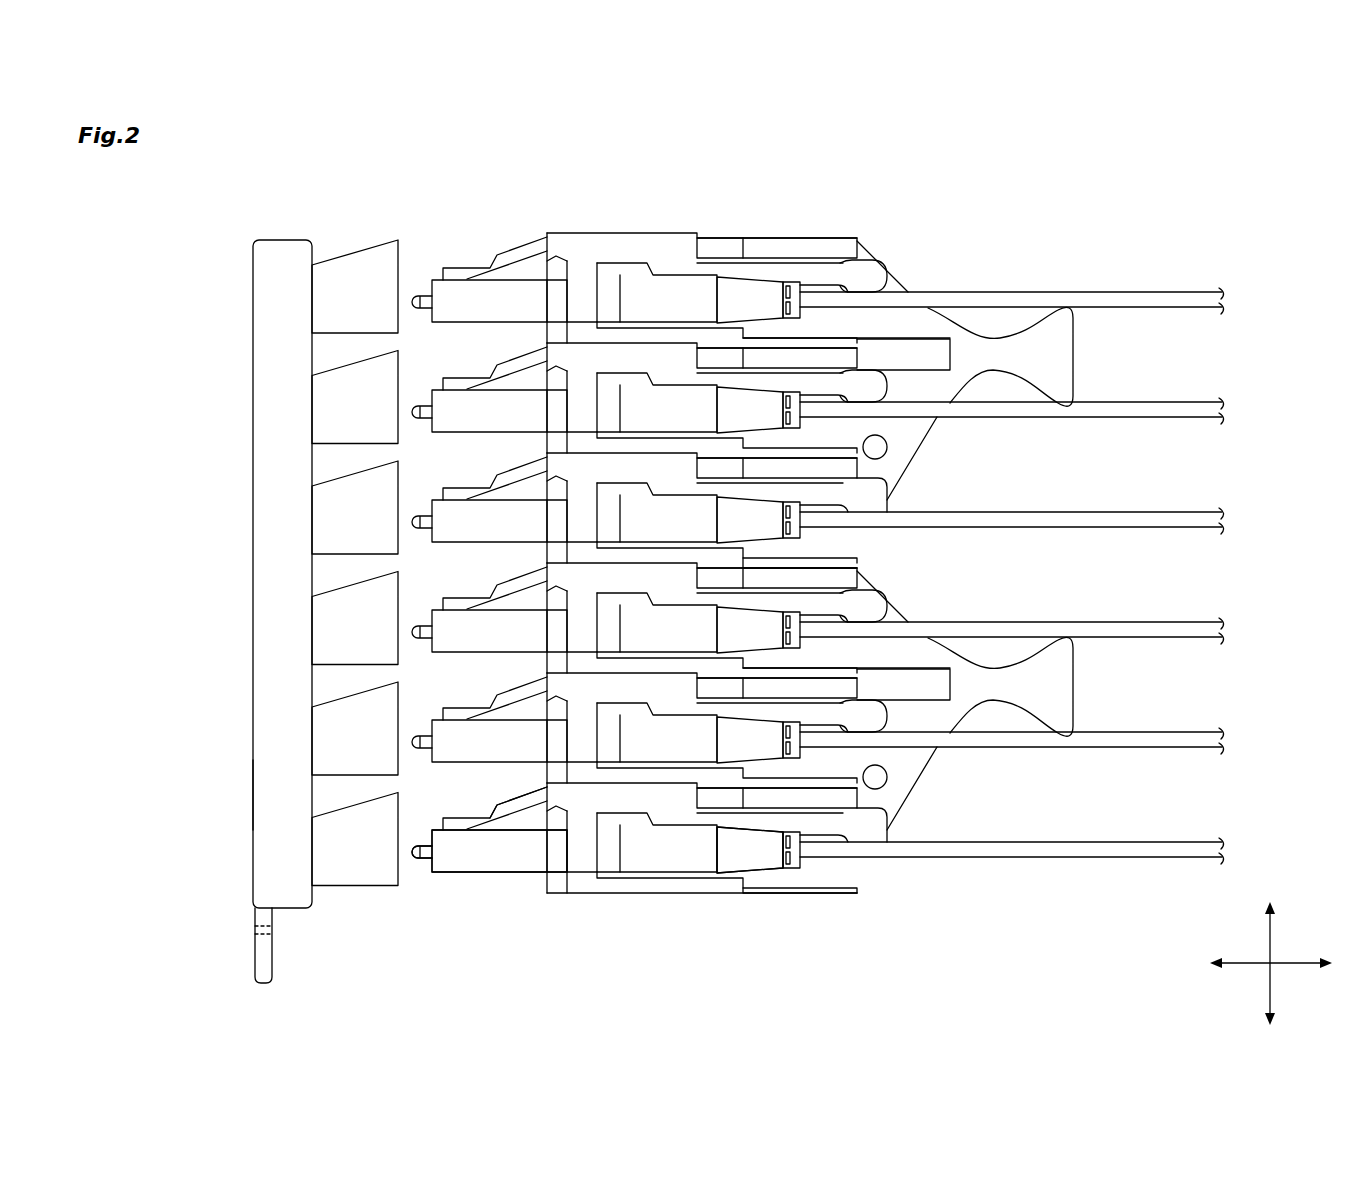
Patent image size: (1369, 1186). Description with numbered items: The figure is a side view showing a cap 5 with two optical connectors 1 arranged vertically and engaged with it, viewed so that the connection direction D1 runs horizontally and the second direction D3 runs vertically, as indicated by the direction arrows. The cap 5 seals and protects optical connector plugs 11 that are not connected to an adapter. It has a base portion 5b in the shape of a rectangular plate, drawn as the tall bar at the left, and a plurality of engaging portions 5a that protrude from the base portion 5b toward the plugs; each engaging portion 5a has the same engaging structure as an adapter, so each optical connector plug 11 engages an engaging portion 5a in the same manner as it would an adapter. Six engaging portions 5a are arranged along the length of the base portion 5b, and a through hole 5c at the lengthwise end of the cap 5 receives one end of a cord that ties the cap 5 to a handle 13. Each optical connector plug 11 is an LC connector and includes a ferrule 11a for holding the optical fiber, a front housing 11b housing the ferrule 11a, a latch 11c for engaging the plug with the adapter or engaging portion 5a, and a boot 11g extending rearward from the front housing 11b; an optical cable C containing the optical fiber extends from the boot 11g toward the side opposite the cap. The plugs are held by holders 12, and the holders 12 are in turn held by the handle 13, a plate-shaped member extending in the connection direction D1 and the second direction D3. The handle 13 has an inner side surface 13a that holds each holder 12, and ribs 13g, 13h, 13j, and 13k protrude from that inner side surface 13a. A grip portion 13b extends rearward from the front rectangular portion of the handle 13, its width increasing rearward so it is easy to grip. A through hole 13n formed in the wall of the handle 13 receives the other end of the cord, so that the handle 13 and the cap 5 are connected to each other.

The optical connector 1 is at (848, 569).
The cap 5 is at (283, 230).
The engaging portion 5a is at (375, 375).
The base portion 5b is at (253, 790).
The through hole 5c is at (255, 930).
The optical connector plug 11 is at (479, 402).
The ferrule 11a is at (431, 856).
The front housing 11b is at (500, 862).
The latch 11c is at (492, 810).
The boot 11g is at (760, 860).
The holder 12 is at (648, 470).
The handle 13 is at (1049, 550).
The inner side surface 13a is at (922, 320).
The grip portion 13b is at (1074, 358).
The rib 13g is at (822, 245).
The rib 13h is at (800, 352).
The rib 13j is at (797, 465).
The rib 13k is at (835, 546).
The through hole 13n is at (887, 446).
The optical cable C is at (1165, 293).
The connection direction D1 is at (1250, 960).
The second direction D3 is at (1272, 940).